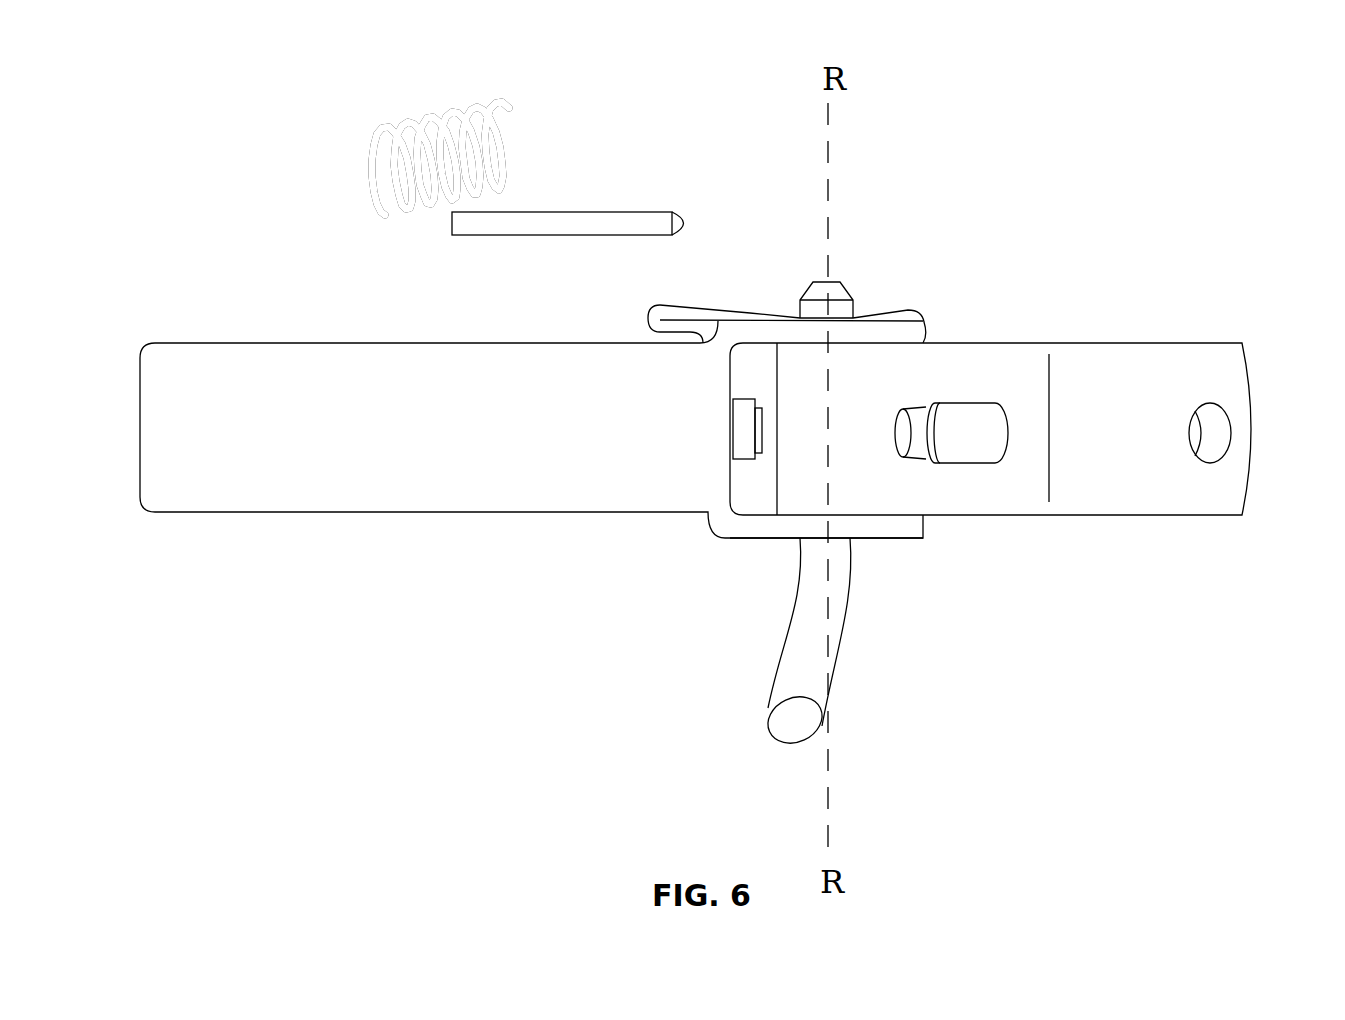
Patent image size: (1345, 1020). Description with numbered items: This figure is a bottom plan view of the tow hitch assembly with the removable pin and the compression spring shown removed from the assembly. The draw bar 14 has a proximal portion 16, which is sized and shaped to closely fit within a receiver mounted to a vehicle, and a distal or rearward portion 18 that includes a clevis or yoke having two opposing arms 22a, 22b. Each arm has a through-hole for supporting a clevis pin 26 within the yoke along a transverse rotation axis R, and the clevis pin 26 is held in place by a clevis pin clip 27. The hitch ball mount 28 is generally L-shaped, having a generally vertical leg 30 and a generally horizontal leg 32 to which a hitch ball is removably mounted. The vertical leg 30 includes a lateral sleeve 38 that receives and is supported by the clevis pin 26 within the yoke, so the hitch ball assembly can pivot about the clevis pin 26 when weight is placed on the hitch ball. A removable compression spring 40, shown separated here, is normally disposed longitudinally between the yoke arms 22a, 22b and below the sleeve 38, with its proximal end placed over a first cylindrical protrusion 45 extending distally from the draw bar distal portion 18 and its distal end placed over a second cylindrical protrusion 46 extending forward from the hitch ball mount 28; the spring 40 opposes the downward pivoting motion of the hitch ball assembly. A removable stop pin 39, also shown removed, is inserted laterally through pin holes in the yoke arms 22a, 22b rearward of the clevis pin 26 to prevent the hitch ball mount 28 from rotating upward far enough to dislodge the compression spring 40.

The draw bar 14 is at (531, 429).
The proximal portion 16 is at (305, 367).
The distal portion 18 is at (646, 472).
The yoke arm 22a is at (902, 328).
The yoke arm 22b is at (903, 528).
The clevis pin 26 is at (830, 281).
The clevis pin clip 27 is at (672, 313).
The hitch ball mount 28 is at (1089, 428).
The vertical leg 30 is at (930, 367).
The horizontal leg 32 is at (1200, 495).
The lateral sleeve 38 is at (796, 429).
The removable stop pin 39 is at (607, 212).
The compression spring 40 is at (473, 110).
The first cylindrical protrusion 45 is at (745, 418).
The second cylindrical protrusion 46 is at (960, 432).